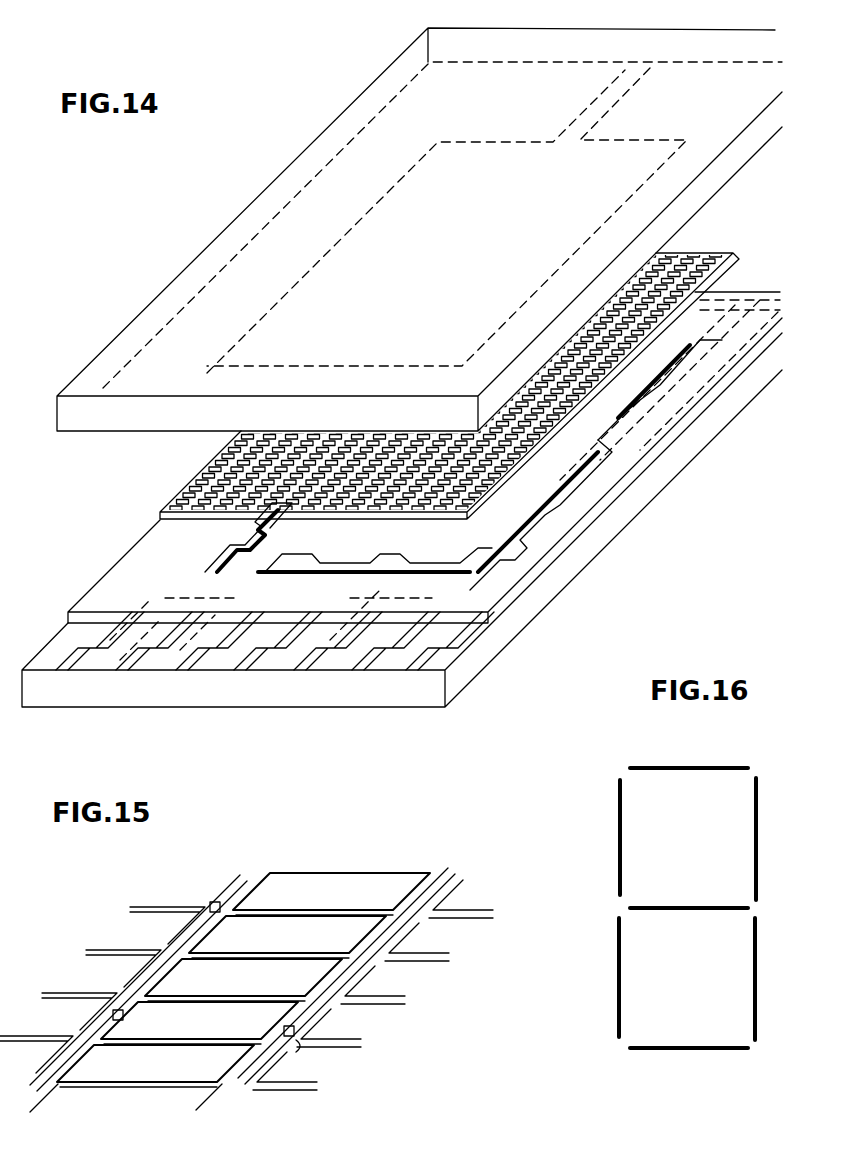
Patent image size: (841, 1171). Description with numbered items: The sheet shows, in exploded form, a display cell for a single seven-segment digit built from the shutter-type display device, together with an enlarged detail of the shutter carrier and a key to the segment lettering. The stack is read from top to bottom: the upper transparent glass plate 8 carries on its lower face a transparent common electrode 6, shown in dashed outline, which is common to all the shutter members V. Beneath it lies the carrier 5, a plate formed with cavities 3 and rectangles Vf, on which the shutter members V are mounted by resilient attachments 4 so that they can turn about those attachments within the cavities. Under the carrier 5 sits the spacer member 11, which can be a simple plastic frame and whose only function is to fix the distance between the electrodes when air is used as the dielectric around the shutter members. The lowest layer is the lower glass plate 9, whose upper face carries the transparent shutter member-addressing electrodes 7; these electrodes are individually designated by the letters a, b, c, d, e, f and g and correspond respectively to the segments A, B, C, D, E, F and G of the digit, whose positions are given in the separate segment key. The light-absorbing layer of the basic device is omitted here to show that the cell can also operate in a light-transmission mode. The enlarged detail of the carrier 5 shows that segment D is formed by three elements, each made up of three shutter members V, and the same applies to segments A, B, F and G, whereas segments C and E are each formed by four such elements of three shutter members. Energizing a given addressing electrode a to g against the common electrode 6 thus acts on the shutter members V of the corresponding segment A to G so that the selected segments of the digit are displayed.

In FIG. 15, the cavities 3 is at (298, 1050).
In FIG. 15, the resilient attachments 4 is at (212, 904).
In FIG. 14, the carrier 5 is at (160, 512).
In FIG. 15, the carrier 5 is at (245, 888).
In FIG. 14, the common electrode 6 is at (362, 210).
In FIG. 14, the transparent electrodes 7 is at (112, 638).
In FIG. 14, the transparent plate 8 is at (200, 272).
In FIG. 14, the transparent plate 9 is at (453, 690).
In FIG. 14, the spacer member 11 is at (88, 598).
In FIG. 14, the shutter members V is at (226, 472).
In FIG. 15, the shutter members V is at (418, 1060).
In FIG. 14, the rectangles Vf is at (722, 258).
In FIG. 15, the rectangles Vf is at (375, 888).
In FIG. 16, the segment A is at (688, 766).
In FIG. 14, the segment B is at (640, 380).
In FIG. 16, the segment B is at (756, 845).
In FIG. 14, the segment C is at (515, 505).
In FIG. 16, the segment C is at (755, 978).
In FIG. 14, the segment D is at (346, 560).
In FIG. 16, the segment D is at (676, 1050).
In FIG. 14, the segment E is at (218, 560).
In FIG. 16, the segment E is at (619, 986).
In FIG. 16, the segment F is at (620, 845).
In FIG. 16, the segment G is at (670, 906).
In FIG. 14, the electrode a is at (406, 665).
In FIG. 14, the electrode b is at (352, 664).
In FIG. 14, the electrode c is at (294, 664).
In FIG. 14, the electrode d is at (234, 665).
In FIG. 14, the electrode e is at (177, 664).
In FIG. 14, the electrode f is at (60, 673).
In FIG. 14, the electrode g is at (118, 666).